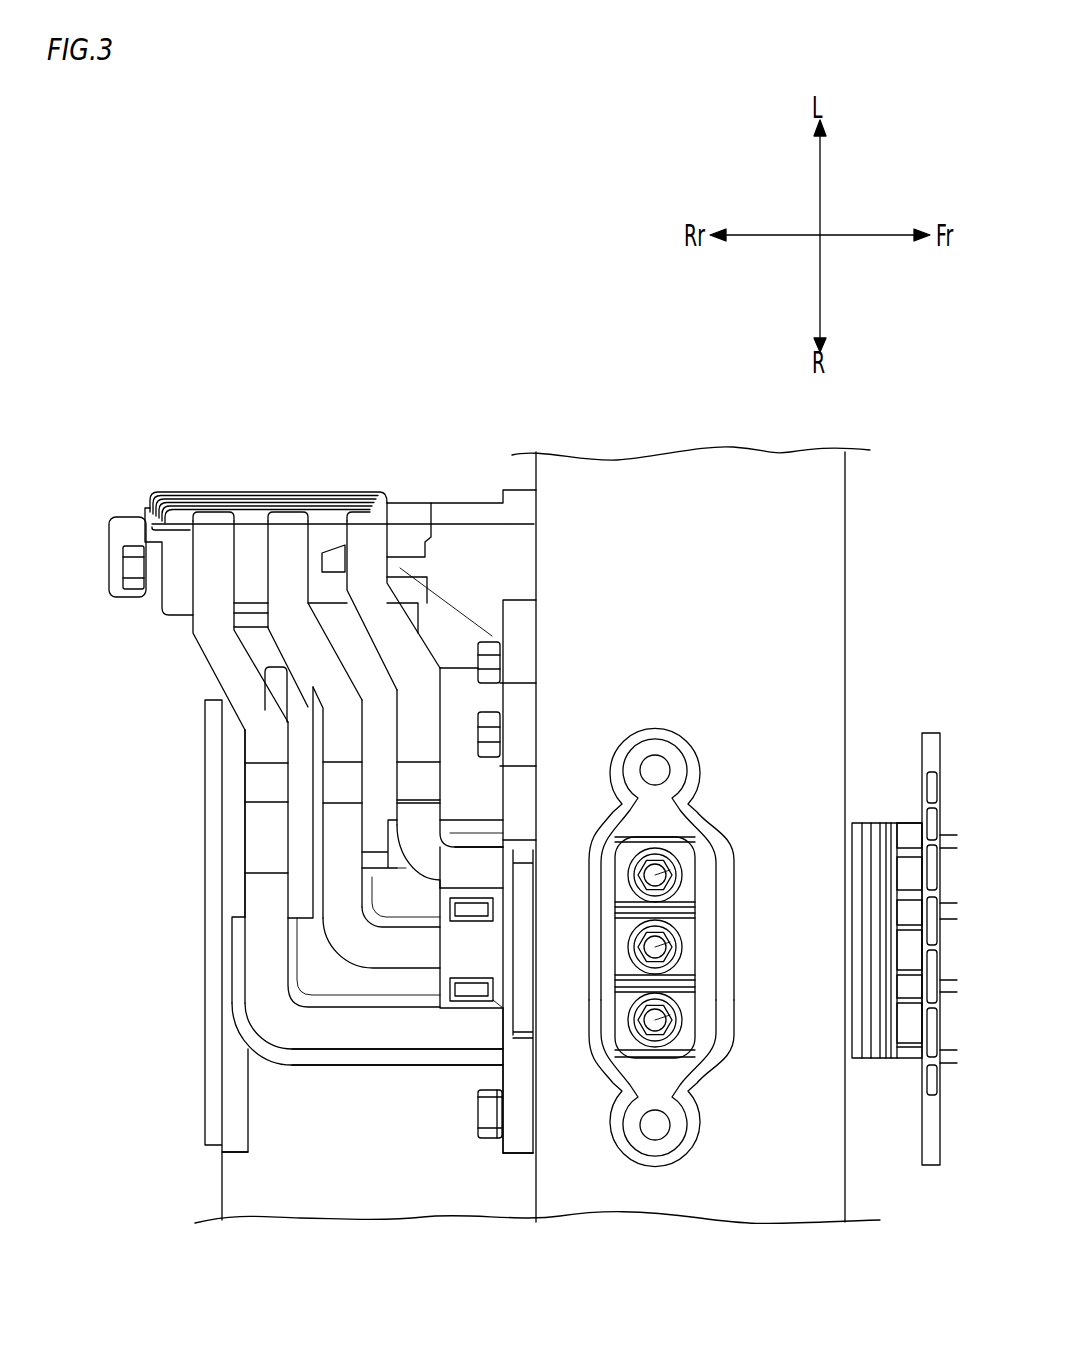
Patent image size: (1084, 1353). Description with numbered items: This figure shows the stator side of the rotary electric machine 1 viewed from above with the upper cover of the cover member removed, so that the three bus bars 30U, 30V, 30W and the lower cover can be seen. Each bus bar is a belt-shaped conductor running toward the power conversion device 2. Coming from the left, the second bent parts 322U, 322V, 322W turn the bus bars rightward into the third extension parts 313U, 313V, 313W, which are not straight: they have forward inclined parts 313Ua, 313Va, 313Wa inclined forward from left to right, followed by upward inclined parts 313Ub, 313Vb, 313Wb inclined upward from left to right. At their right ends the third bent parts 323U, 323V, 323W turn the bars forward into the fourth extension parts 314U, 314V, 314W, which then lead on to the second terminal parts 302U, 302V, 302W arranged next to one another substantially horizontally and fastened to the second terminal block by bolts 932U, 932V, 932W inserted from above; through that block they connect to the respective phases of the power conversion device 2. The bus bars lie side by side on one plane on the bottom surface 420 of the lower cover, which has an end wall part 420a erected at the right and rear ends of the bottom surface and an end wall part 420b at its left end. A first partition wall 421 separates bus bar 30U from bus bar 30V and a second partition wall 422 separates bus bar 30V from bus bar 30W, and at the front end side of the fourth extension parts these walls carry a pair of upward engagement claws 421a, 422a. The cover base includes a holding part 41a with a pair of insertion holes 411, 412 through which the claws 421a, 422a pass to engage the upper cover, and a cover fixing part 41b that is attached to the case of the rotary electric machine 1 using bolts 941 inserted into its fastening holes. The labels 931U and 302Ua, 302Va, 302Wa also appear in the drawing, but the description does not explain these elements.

The rotary electric machine 1 is at (660, 414).
The power conversion device 2 is at (929, 730).
The bus bar 30U is at (205, 548).
The bus bar 30V is at (328, 490).
The bus bar 30W is at (372, 550).
The second bent part 322U is at (212, 495).
The second bent part 322V is at (291, 492).
The second bent part 322W is at (378, 492).
The U-phase fastening bolt 931U is at (115, 532).
The forward inclined part 313Ua is at (213, 637).
The upward inclined part 313Ub is at (253, 783).
The third extension part 313U is at (268, 910).
The third bent part 323U is at (258, 1018).
The forward inclined part 313Va is at (297, 650).
The upward inclined part 313Vb is at (333, 790).
The third extension part 313V is at (320, 940).
The third bent part 323V is at (300, 935).
The forward inclined part 313Wa is at (448, 615).
The upward inclined part 313Wb is at (442, 666).
The third extension part 313W is at (425, 812).
The third bent part 323W is at (440, 817).
The fourth extension part 314U is at (375, 1068).
The fourth extension part 314V is at (400, 1068).
The fourth extension part 314W is at (503, 757).
The bolt 941 is at (502, 672).
The holding part 41a is at (440, 955).
The cover fixing part 41b is at (522, 1150).
The insertion hole 411 is at (495, 1000).
The insertion hole 412 is at (493, 903).
The bottom surface 420 is at (337, 1068).
The end wall part 420a is at (272, 1075).
The end wall part 420b is at (462, 866).
The first partition wall 421 is at (262, 1013).
The engagement claw 421a is at (470, 1010).
The second partition wall 422 is at (372, 878).
The engagement claw 422a is at (445, 845).
The second terminal part 302U is at (700, 1075).
The second terminal part 302V is at (697, 925).
The second terminal part 302W is at (695, 806).
The U-phase terminal fastening portion 302Ua is at (745, 1042).
The V-phase terminal fastening portion 302Va is at (744, 956).
The W-phase terminal fastening portion 302Wa is at (747, 851).
The bolt 932U is at (665, 1020).
The bolt 932V is at (665, 947).
The bolt 932W is at (662, 862).